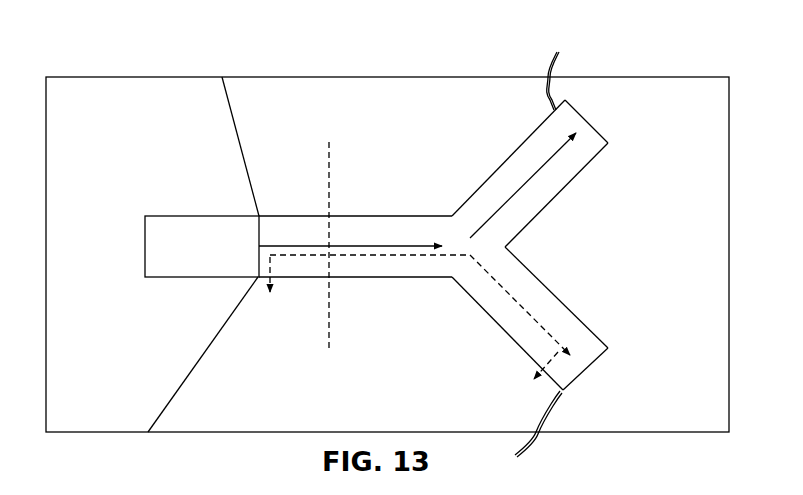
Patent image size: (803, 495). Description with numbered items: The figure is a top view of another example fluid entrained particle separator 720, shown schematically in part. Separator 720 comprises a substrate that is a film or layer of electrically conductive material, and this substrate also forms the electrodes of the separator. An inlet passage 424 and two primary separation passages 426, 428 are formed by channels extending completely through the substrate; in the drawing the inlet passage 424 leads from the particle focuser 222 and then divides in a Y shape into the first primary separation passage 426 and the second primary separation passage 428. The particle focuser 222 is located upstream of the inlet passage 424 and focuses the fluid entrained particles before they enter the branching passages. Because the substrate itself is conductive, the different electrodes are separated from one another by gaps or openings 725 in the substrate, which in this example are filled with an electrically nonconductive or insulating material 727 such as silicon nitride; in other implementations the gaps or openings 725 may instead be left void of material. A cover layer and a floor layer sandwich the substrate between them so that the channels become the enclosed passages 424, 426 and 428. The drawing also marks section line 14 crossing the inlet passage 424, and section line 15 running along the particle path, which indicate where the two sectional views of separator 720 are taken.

The fluid entrained particle separator 720 is at (132, 51).
The gaps or openings 725 is at (235, 120).
The electrically nonconductive or insulating material 727 is at (537, 252).
The particle focuser 222 is at (193, 215).
The inlet passage 424 is at (315, 215).
The primary separation passage 426 is at (545, 122).
The primary separation passage 428 is at (553, 293).
The section line 14- 14 is at (329, 142).
The section line 15- 15 is at (408, 328).